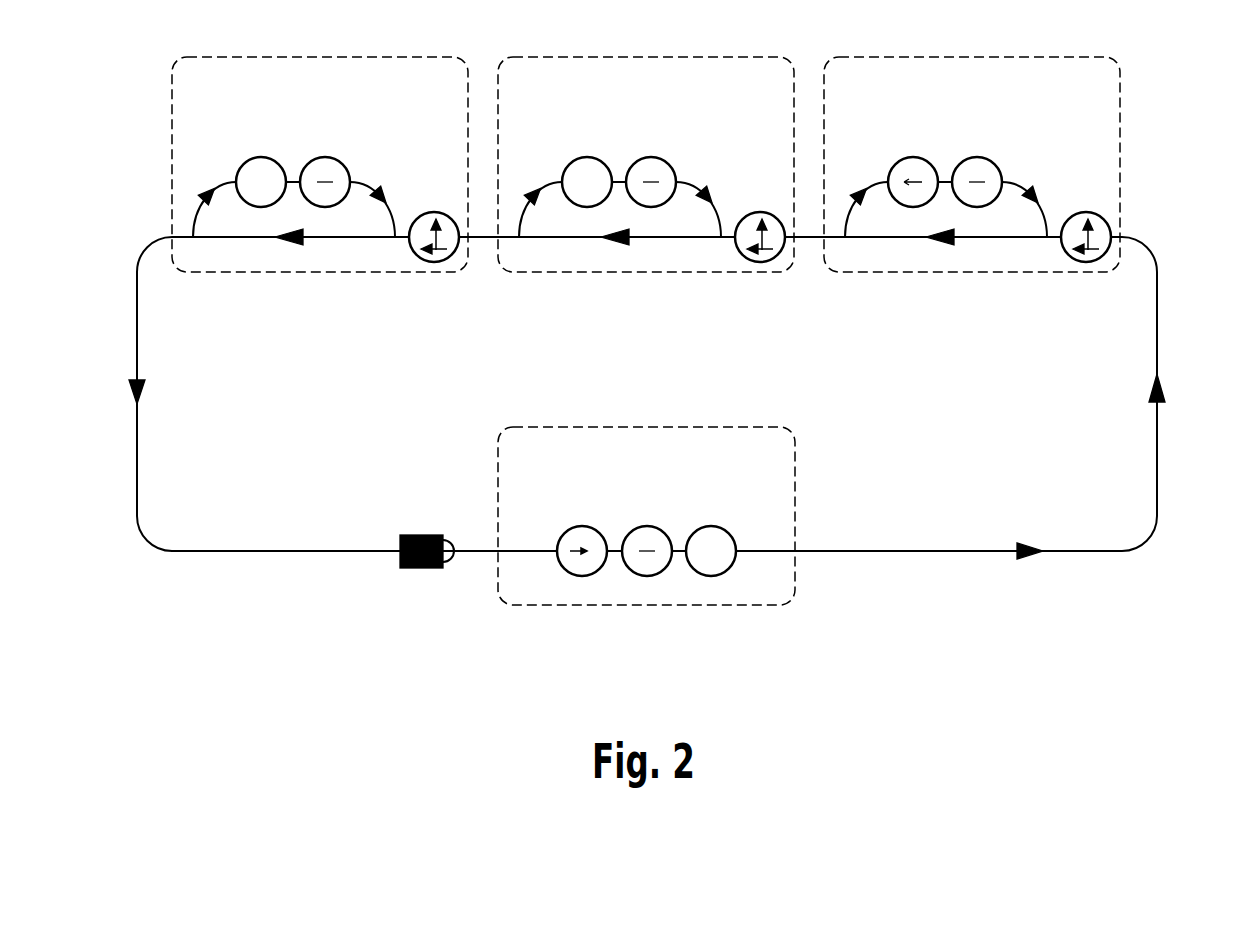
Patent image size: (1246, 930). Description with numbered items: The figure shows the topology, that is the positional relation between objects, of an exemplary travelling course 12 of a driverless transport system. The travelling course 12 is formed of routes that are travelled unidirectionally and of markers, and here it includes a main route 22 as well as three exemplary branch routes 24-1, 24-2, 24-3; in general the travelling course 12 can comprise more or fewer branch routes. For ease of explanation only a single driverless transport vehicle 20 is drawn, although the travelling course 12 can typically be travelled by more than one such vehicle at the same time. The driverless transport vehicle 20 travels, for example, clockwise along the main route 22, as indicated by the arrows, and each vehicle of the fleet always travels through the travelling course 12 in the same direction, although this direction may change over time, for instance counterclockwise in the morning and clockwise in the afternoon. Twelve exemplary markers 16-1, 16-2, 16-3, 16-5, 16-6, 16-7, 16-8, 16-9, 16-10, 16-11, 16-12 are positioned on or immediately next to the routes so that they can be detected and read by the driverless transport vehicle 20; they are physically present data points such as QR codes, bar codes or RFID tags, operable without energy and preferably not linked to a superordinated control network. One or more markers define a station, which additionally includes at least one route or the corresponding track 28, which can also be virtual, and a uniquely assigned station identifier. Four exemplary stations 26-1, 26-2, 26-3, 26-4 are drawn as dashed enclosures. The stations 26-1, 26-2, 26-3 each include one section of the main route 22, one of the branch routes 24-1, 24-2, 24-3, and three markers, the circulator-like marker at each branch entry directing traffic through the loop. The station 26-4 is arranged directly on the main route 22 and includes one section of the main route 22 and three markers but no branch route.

The travelling course 12 is at (151, 153).
The marker 16-1 is at (834, 394).
The marker 16-2 is at (647, 526).
The marker 16-3 is at (711, 526).
The marker 16-5 is at (977, 146).
The marker 16-6 is at (913, 146).
The marker 16-7 is at (760, 275).
The marker 16-8 is at (651, 146).
The marker 16-9 is at (587, 146).
The marker 16-10 is at (434, 263).
The marker 16-11 is at (325, 157).
The marker 16-12 is at (261, 157).
The driverless transport vehicle 20 is at (425, 533).
The main route 22 is at (295, 552).
The branch route 24-1 is at (957, 161).
The branch route 24-2 is at (631, 161).
The branch route 24-3 is at (373, 173).
The station 26-1 is at (838, 316).
The station 26-2 is at (646, 212).
The station 26-3 is at (254, 272).
The station 26-4 is at (756, 607).
The track 28 is at (1157, 475).